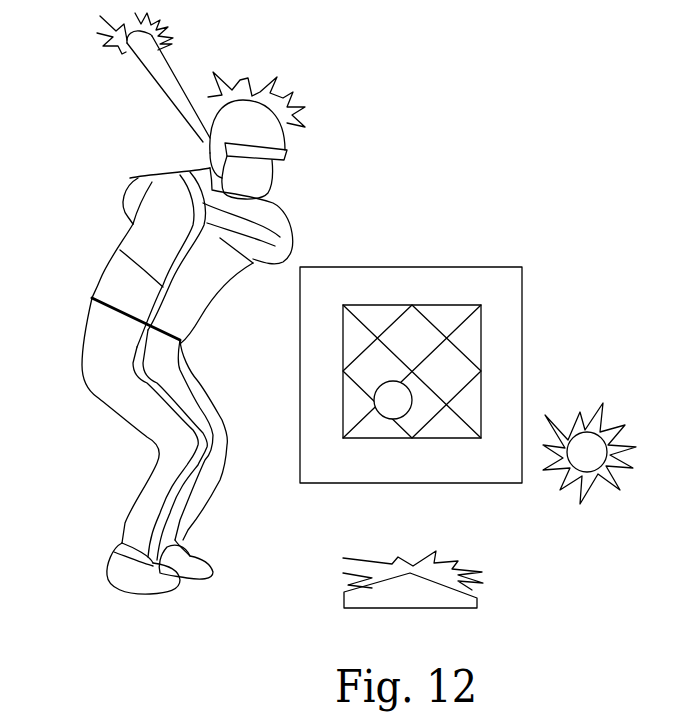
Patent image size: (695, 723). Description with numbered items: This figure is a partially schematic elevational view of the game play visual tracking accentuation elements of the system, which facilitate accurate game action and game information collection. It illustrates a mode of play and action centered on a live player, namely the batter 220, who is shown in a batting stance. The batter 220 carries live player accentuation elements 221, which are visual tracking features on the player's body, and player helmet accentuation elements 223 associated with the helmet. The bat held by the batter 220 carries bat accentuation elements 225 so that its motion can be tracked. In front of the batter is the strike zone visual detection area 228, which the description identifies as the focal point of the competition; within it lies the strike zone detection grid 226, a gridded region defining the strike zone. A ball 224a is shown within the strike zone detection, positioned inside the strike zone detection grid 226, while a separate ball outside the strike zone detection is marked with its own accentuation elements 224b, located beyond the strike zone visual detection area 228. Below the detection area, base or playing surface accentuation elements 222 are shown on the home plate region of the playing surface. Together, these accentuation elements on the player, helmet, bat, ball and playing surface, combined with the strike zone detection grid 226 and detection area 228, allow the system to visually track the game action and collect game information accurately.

The live player (batter) 220 is at (156, 372).
The live player accentuation elements 221 is at (120, 250).
The base (playing surface) accentuation elements 222 is at (480, 598).
The player helmet accentuation elements 223 is at (258, 84).
The ball (within strike zone detection) 224a is at (393, 419).
The ball (outside strike zone detection) accentuation elements 224b is at (620, 447).
The bat accentuation elements 225 is at (140, 73).
The strike zone detection grid 226 is at (432, 303).
The strike zone visual detection area 228 is at (523, 342).